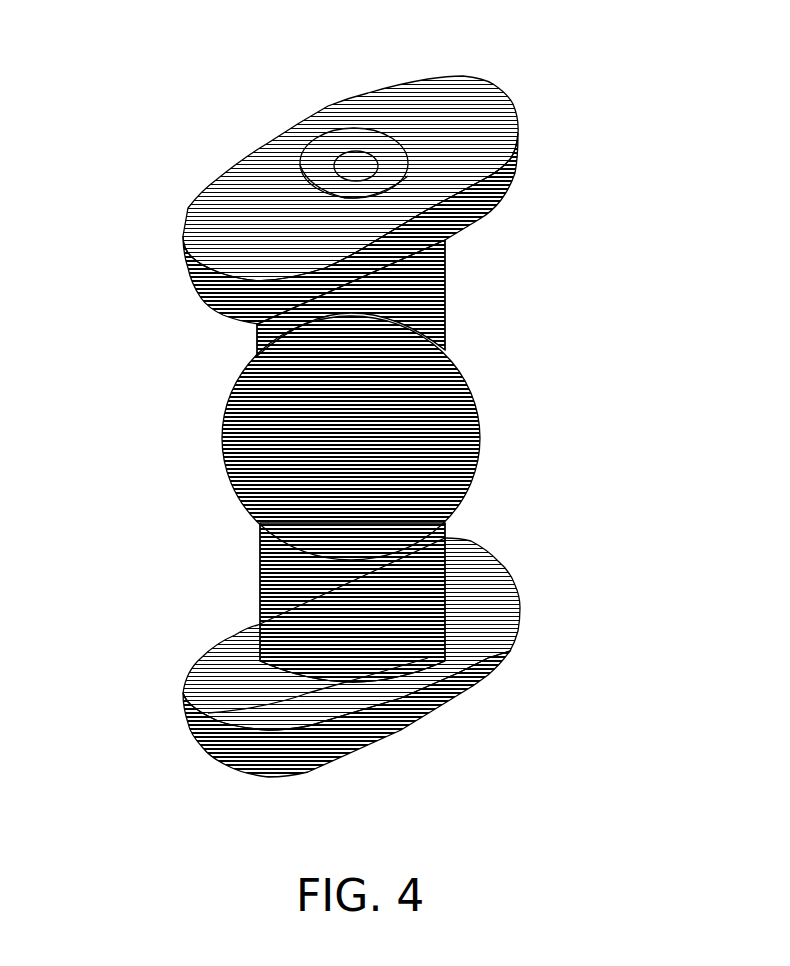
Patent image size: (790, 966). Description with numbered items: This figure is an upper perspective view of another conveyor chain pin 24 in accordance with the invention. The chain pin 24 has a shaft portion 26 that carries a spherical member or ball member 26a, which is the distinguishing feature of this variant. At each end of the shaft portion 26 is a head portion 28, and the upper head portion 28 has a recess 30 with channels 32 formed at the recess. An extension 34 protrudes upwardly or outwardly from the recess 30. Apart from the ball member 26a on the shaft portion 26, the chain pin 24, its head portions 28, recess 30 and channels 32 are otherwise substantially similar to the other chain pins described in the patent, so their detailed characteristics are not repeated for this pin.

The conveyor chain pin 24 is at (550, 296).
The shaft portion 26 is at (270, 563).
The spherical member or ball member 26a is at (478, 420).
The head portion 28 is at (195, 275).
The recess 30 is at (380, 155).
The channel 32 is at (293, 133).
The extension 34 is at (352, 162).